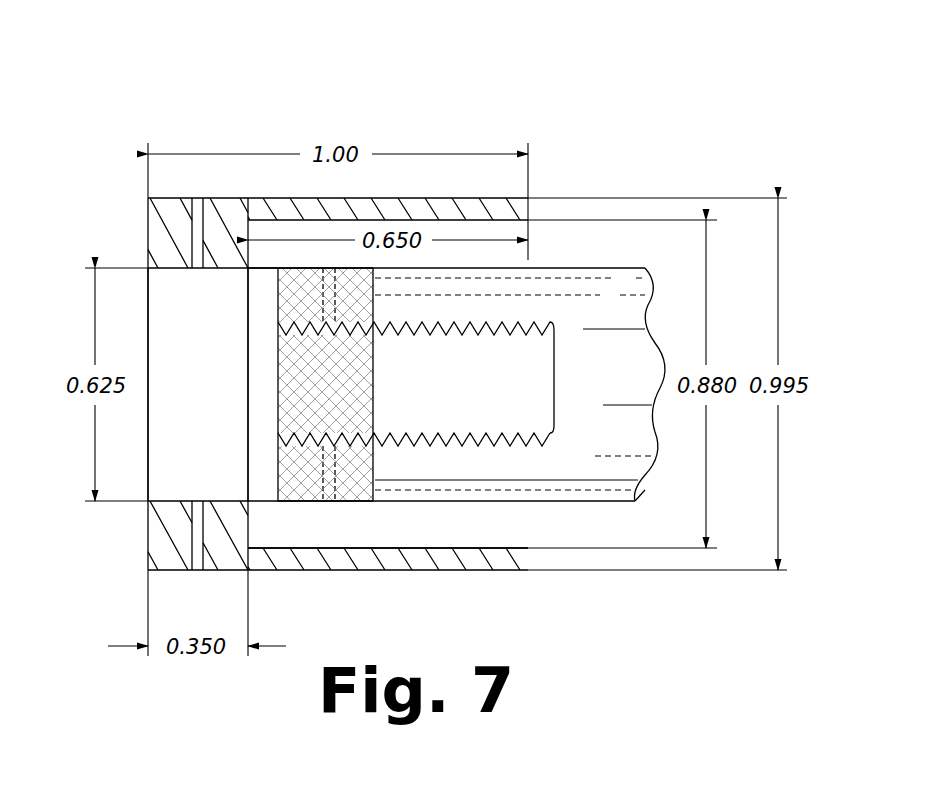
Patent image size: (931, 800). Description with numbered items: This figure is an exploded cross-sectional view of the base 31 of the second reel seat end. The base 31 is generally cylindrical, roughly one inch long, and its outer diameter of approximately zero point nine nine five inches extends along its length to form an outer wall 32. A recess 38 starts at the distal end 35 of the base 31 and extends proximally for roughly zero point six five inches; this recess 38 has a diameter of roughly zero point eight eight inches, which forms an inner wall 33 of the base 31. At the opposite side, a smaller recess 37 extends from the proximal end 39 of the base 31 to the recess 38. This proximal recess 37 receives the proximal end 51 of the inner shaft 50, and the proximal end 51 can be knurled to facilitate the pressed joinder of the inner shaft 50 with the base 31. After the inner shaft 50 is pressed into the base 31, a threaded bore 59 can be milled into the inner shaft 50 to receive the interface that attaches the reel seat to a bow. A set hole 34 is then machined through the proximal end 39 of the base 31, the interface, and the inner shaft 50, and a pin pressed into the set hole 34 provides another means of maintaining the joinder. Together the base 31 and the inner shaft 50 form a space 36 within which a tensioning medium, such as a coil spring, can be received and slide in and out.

The base 31 is at (356, 323).
The outer wall 32 is at (418, 198).
The inner wall 33 is at (365, 548).
The set hole 34 is at (197, 208).
The distal end 35 is at (578, 532).
The space 36 is at (302, 521).
The recess 37 is at (174, 338).
The recess 38 is at (494, 257).
The proximal end 39 is at (126, 240).
The inner shaft 50 is at (612, 268).
The proximal end of the inner shaft 51 is at (274, 305).
The threaded bore 59 is at (418, 336).